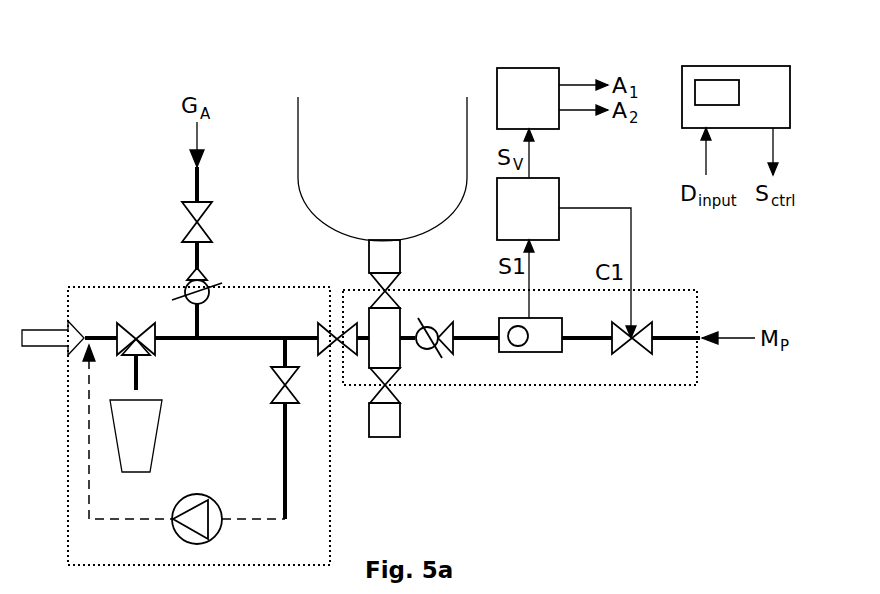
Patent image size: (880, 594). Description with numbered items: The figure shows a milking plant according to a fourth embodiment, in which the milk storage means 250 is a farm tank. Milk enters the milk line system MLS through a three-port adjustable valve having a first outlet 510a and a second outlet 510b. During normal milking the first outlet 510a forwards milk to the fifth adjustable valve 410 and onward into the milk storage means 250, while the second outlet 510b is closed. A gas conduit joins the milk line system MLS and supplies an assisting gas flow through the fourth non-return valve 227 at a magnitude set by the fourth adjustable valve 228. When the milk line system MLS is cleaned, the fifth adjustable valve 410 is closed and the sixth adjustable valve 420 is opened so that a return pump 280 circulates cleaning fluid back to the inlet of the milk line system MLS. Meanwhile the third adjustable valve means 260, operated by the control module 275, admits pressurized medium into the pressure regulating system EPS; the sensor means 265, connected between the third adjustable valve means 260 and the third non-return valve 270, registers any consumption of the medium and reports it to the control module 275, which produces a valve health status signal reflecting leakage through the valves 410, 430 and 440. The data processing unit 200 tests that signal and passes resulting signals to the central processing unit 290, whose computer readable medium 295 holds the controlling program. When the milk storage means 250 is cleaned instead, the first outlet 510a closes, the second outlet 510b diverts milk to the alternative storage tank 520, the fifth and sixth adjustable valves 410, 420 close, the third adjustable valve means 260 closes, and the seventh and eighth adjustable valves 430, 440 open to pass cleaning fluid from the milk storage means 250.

The data processing unit 200 is at (528, 68).
The fourth non-return valve 227 is at (208, 275).
The fourth adjustable valve 228 is at (190, 228).
The milk storage means 250 is at (298, 115).
The third adjustable valve means 260 is at (617, 347).
The sensor means 265 is at (508, 318).
The third non-return valve 270 is at (437, 350).
The control module 275 is at (559, 193).
The return pump 280 is at (218, 535).
The central processing unit 290 is at (753, 66).
The computer readable medium 295 is at (715, 80).
The fifth adjustable valve 410 is at (322, 330).
The sixth adjustable valve 420 is at (272, 403).
The seventh adjustable valve 430 is at (385, 292).
The eighth adjustable valve 440 is at (390, 377).
The first outlet 510a is at (152, 325).
The second outlet 510b is at (140, 355).
The alternative storage tank 520 is at (155, 440).
The milk line system MLS is at (145, 287).
The pressure regulating system EPS is at (610, 385).